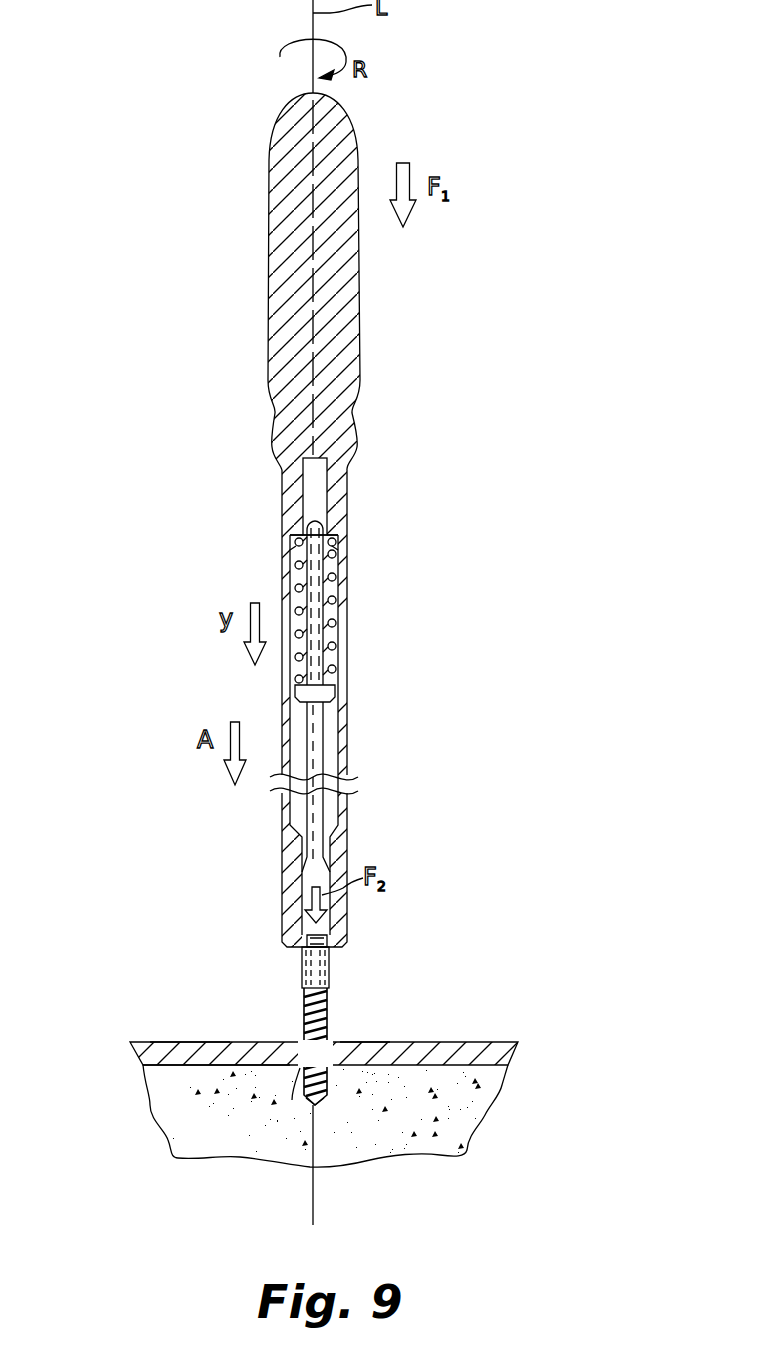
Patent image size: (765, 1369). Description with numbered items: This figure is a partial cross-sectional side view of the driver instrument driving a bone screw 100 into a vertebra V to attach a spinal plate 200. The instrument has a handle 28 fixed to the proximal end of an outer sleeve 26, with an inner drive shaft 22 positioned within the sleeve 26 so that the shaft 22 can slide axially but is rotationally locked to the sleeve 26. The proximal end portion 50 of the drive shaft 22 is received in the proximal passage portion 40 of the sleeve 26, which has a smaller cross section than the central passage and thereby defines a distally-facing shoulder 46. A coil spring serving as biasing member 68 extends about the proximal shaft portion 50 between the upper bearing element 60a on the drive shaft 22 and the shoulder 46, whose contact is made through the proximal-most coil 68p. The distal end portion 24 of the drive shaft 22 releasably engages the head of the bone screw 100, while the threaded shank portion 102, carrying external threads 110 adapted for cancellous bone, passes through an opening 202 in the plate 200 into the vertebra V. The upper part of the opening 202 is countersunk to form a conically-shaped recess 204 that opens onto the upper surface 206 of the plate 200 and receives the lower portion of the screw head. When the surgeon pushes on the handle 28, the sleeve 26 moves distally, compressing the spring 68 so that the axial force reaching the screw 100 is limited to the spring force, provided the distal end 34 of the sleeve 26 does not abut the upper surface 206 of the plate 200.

The handle 28 is at (390, 311).
The proximal passage portion 40 is at (316, 479).
The support member 26 is at (368, 608).
The distally-facing shoulder 46 is at (287, 550).
The proximal end portion 50 is at (309, 585).
The biasing member 68 is at (346, 642).
The proximal-most coil 68p is at (330, 553).
The upper bearing element 60a is at (299, 693).
The drive shaft 22 is at (325, 747).
The distal end portion 24 is at (341, 966).
The distal end 34 is at (302, 949).
The bone screw 100 is at (326, 1005).
The threaded shank portion 102 is at (335, 1091).
The openings 202 is at (297, 1051).
The conically-shaped recess 204 is at (365, 1041).
The upper surface 206 is at (210, 1042).
The spinal plate 200 is at (159, 1030).
The vertebra V is at (185, 1123).
The external threads 110 is at (300, 1068).